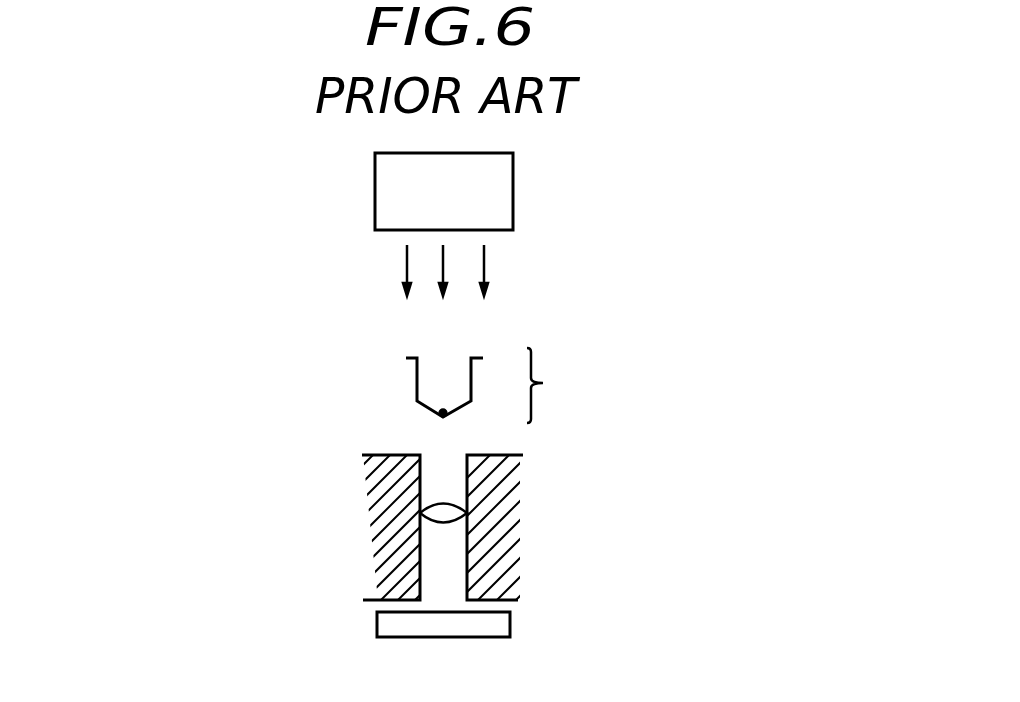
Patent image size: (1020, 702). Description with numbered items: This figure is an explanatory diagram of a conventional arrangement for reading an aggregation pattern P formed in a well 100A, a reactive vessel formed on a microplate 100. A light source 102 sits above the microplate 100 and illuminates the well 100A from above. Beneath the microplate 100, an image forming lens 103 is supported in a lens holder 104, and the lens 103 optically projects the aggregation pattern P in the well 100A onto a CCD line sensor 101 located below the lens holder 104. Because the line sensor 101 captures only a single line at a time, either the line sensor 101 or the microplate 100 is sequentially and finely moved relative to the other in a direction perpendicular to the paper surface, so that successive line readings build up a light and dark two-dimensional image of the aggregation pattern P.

The light source 102 is at (513, 187).
The aggregation pattern P is at (443, 410).
The well 100A is at (417, 388).
The microplate 100 is at (543, 383).
The lens holder 104 is at (518, 455).
The image forming lens 103 is at (443, 502).
The CCD line sensor 101 is at (513, 618).